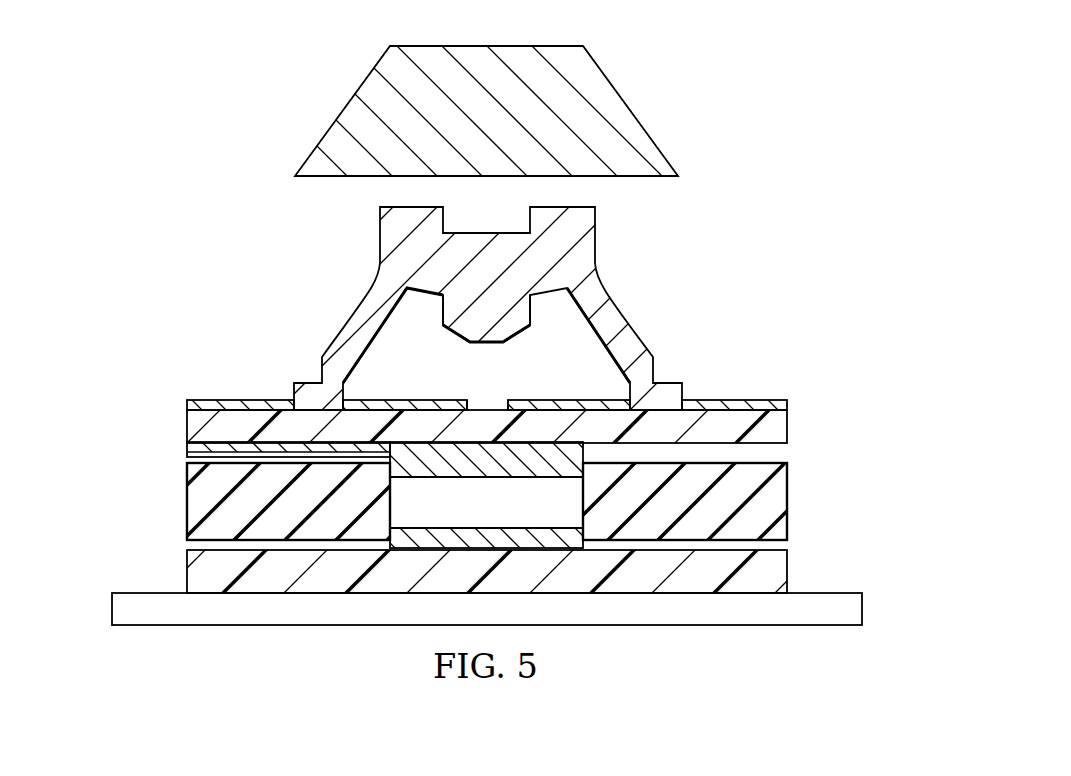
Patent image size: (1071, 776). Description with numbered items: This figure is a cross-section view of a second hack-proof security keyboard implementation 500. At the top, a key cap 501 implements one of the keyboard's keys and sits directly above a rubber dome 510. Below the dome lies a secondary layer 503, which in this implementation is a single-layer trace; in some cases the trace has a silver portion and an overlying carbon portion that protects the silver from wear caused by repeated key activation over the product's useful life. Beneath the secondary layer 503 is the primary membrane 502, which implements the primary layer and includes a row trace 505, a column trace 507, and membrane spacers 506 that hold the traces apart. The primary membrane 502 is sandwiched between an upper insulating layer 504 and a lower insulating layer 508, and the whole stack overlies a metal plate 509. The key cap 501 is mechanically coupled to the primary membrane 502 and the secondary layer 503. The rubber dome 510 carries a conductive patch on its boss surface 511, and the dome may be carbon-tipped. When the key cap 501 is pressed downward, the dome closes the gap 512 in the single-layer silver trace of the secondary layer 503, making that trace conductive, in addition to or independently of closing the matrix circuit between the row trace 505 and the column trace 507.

The second hack-proof security keyboard implementation 500 is at (257, 94).
The key cap 501 is at (622, 112).
The primary membrane 502 is at (110, 413).
The secondary layer 503 is at (228, 405).
The insulating layer 504 is at (778, 425).
The row trace 505 is at (190, 450).
The membrane spacers 506 is at (195, 508).
The column trace 507 is at (515, 537).
The insulating layer 508 is at (778, 562).
The metal plate 509 is at (853, 610).
The rubber dome 510 is at (363, 312).
The boss surface 511 is at (492, 333).
The gap 512 is at (470, 388).